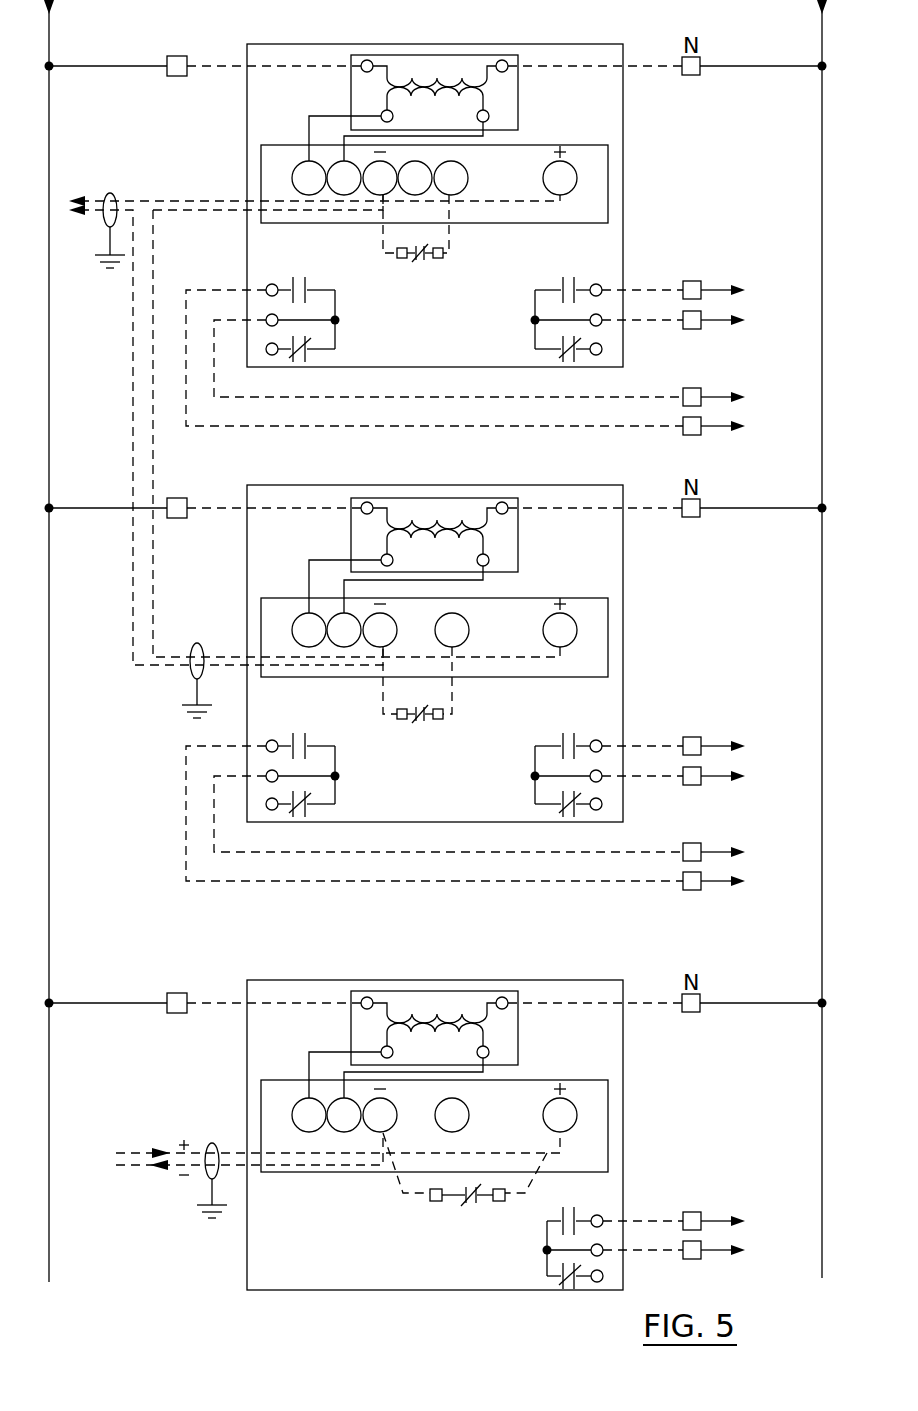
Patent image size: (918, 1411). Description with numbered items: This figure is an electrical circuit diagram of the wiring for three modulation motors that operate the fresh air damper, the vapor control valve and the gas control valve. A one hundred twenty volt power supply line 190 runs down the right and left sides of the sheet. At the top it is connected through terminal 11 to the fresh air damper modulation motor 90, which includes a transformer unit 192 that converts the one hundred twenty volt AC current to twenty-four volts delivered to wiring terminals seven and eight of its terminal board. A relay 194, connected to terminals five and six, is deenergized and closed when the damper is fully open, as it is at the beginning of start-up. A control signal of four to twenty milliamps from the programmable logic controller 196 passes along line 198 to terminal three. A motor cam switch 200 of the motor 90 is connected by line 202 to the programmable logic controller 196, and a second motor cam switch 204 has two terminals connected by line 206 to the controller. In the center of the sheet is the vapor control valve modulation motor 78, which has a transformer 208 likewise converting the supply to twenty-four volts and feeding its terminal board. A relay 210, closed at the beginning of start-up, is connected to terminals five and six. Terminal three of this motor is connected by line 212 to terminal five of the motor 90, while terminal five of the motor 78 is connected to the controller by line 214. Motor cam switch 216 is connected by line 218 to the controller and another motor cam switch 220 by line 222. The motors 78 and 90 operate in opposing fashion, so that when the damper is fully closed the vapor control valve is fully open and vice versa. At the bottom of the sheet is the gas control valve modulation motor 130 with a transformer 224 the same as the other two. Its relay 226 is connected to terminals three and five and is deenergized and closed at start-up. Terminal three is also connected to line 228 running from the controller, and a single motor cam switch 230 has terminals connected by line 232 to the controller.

The terminal 11 is at (205, 518).
The power supply line 190 is at (49, 124).
The fresh air damper modulation motor 90 is at (623, 150).
The transformer unit 192 is at (518, 112).
The relay 194 is at (422, 260).
The programmable logic controller 196 is at (435, 697).
The line 198 is at (192, 200).
The motor cam switch 200 is at (339, 320).
The line 202 is at (410, 392).
The second motor cam switch 204 is at (533, 323).
The line 206 is at (636, 291).
The line 212 is at (153, 464).
The line 214 is at (133, 390).
The vapor control valve modulation motor 78 is at (623, 635).
The transformer 208 is at (518, 555).
The relay 210 is at (440, 718).
The motor cam switch 216 is at (339, 776).
The line 218 is at (410, 850).
The motor cam switch 220 is at (533, 776).
The line 222 is at (637, 746).
The gas control valve modulation motor 130 is at (623, 1105).
The transformer 224 is at (518, 1048).
The relay 226 is at (468, 1205).
The line 228 is at (497, 1153).
The motor cam switch 230 is at (547, 1243).
The line 232 is at (637, 1222).